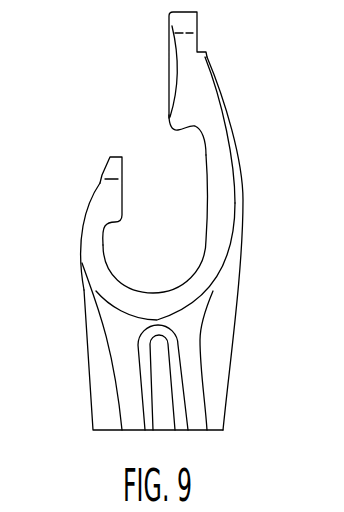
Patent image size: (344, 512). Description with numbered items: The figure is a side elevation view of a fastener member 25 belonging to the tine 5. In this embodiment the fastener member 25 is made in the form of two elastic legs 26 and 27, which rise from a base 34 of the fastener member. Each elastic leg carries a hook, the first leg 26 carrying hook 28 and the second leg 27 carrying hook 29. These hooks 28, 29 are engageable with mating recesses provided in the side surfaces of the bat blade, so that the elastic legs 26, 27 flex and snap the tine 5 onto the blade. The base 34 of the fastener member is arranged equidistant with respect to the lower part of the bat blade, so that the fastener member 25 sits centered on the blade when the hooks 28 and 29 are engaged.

The tine 5 is at (198, 402).
The fastener member 25 is at (192, 25).
The elastic leg 26 is at (223, 193).
The elastic leg 27 is at (95, 253).
The hook 28 is at (175, 123).
The hook 29 is at (112, 210).
The base 34 is at (156, 291).